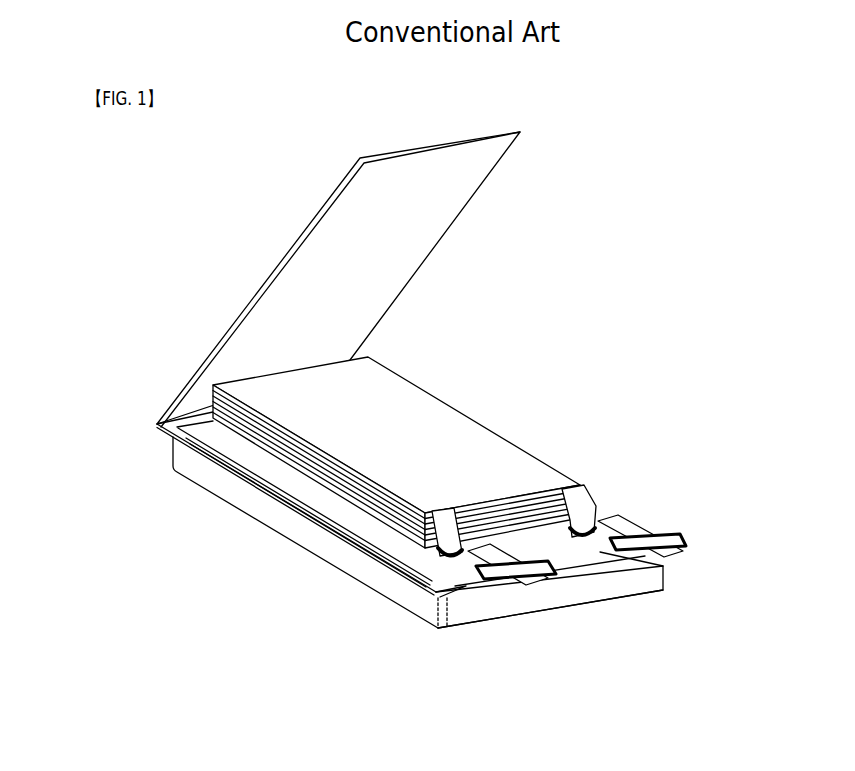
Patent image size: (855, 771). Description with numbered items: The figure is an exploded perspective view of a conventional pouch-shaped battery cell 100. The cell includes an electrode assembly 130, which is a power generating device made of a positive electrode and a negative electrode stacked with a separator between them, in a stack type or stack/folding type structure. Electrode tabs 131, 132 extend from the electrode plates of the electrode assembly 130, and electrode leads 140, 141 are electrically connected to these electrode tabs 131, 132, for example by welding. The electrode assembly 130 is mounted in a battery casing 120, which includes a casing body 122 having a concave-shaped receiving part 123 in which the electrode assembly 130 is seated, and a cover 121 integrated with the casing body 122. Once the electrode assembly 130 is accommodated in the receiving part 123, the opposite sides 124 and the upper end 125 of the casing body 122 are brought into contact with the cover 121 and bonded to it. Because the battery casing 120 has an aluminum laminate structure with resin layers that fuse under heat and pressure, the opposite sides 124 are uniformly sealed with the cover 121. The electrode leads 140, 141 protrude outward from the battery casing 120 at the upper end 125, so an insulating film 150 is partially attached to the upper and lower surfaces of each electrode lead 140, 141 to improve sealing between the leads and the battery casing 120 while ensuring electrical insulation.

The pouch-shaped battery cell 100 is at (146, 166).
The battery casing 120 is at (372, 520).
The cover 121 is at (230, 328).
The casing body 122 is at (308, 550).
The receiving part 123 is at (246, 460).
The opposite sides 124 is at (284, 494).
The upper end 125 is at (580, 560).
The electrode assembly 130 is at (462, 383).
The electrode tab 131 is at (435, 548).
The electrode tab 132 is at (598, 491).
The electrode lead 140 is at (468, 560).
The electrode lead 141 is at (605, 519).
The insulating film 150 is at (472, 627).